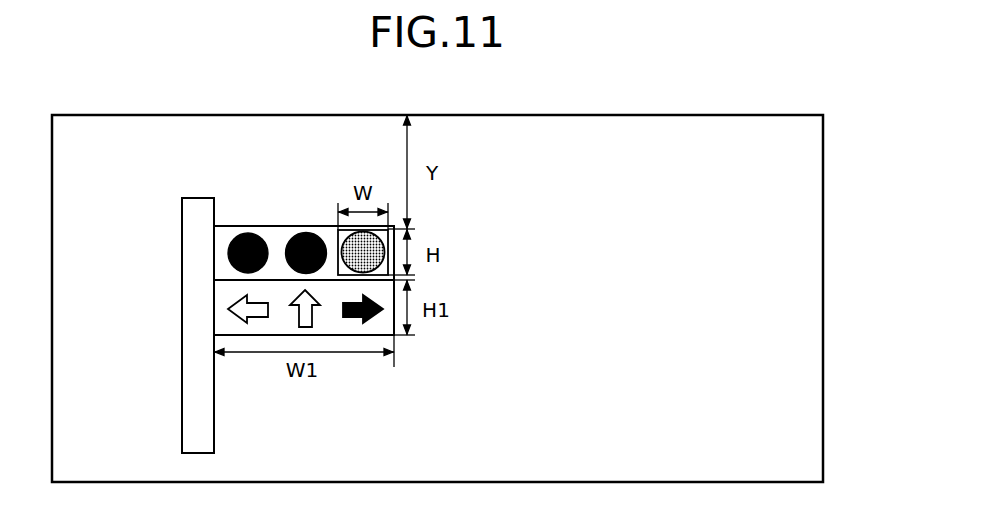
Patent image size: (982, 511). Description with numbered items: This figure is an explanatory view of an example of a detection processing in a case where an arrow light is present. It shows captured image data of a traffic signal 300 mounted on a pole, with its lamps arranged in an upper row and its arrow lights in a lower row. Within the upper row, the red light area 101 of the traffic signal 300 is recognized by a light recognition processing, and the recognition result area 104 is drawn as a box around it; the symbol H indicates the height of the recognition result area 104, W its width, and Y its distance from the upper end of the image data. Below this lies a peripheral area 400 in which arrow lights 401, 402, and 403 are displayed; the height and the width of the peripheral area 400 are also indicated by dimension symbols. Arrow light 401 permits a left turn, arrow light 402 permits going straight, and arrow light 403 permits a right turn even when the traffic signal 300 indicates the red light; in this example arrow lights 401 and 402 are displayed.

The traffic signal 300 is at (238, 226).
The peripheral area 400 is at (272, 337).
The red light area 101 is at (345, 239).
The recognition result area 104 is at (340, 232).
The arrow light 401 is at (255, 318).
The arrow light 402 is at (310, 327).
The arrow light 403 is at (352, 315).